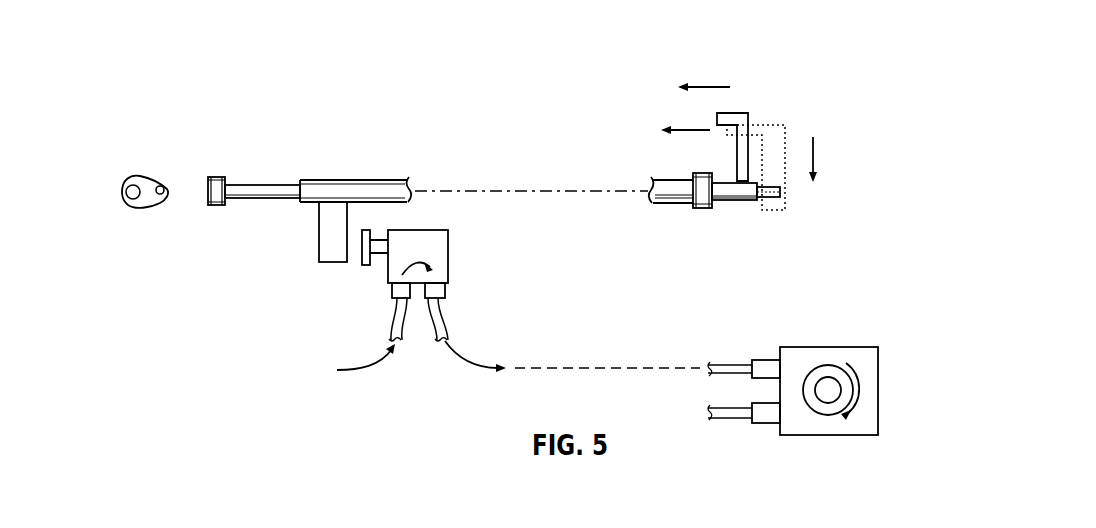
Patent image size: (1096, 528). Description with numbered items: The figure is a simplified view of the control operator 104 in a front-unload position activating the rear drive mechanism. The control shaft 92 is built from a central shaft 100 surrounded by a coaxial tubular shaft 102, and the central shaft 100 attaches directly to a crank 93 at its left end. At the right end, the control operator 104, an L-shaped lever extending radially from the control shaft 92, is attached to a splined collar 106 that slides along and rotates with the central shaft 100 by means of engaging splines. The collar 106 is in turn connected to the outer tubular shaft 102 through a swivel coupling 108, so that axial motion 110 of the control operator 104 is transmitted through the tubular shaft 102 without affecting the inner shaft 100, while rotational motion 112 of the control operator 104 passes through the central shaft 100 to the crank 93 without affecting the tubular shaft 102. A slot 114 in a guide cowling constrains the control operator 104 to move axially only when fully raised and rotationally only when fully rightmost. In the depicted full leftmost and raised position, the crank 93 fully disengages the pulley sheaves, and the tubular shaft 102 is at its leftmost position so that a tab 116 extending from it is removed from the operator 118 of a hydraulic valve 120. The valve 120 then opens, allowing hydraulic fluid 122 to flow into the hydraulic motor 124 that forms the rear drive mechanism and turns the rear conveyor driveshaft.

The control shaft 92 is at (350, 130).
The crank 93 is at (213, 207).
The central shaft 100 is at (275, 183).
The coaxial tubular shaft 102 is at (388, 179).
The control operator 104 is at (748, 112).
The splined collar 106 is at (740, 200).
The swivel coupling 108 is at (705, 208).
The axial motion 110 is at (713, 85).
The rotational motion 112 is at (815, 153).
The slot 114 is at (788, 123).
The tab 116 is at (335, 257).
The operator 118 is at (381, 255).
The hydraulic valve 120 is at (443, 247).
The hydraulic fluid 122 is at (463, 357).
The hydraulic motor 124 is at (863, 347).